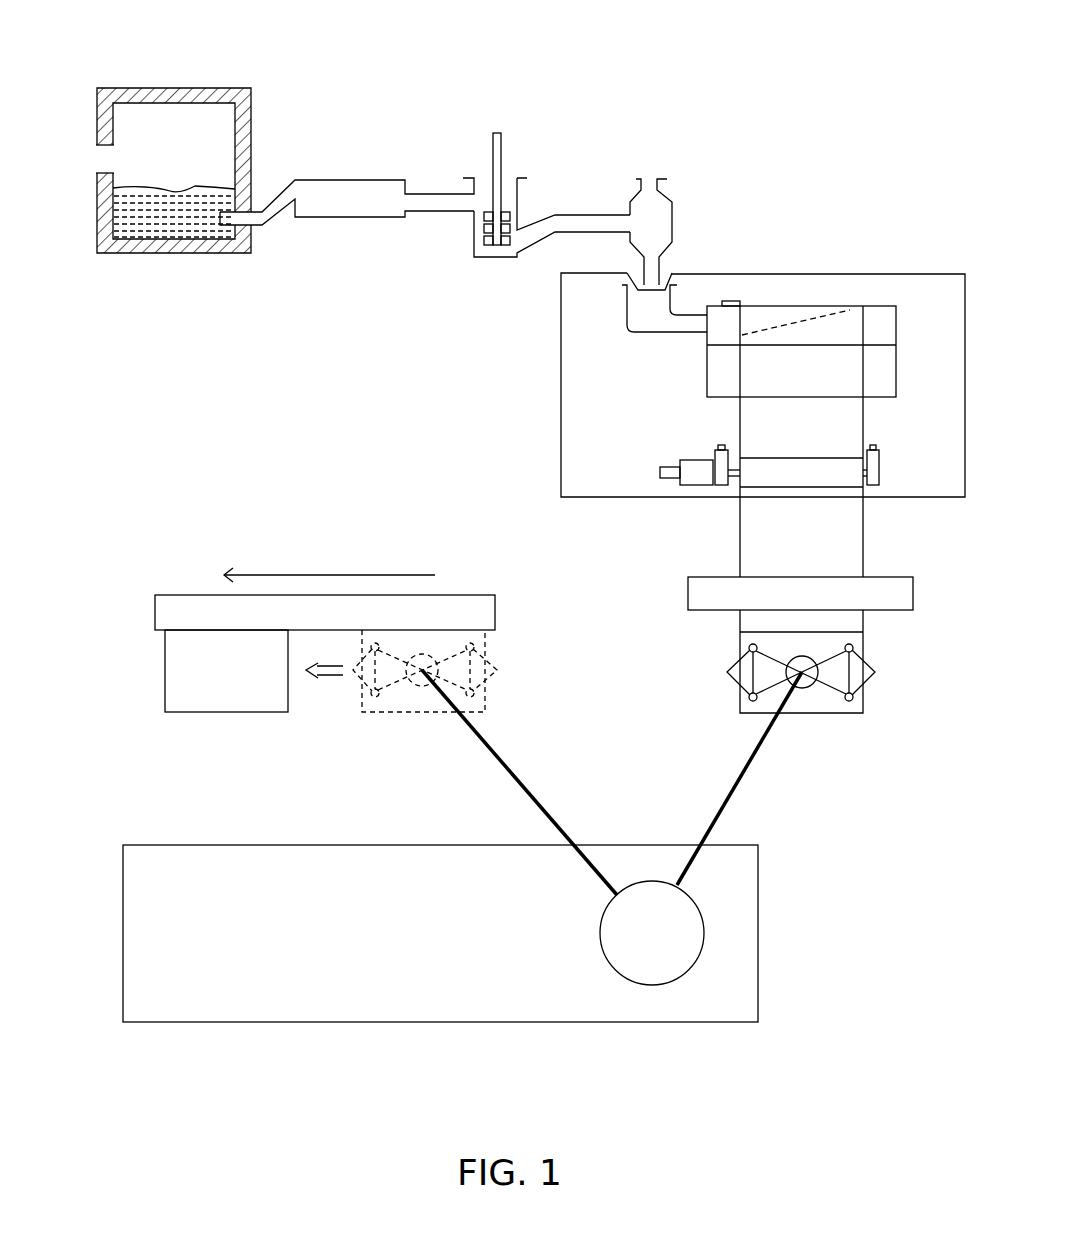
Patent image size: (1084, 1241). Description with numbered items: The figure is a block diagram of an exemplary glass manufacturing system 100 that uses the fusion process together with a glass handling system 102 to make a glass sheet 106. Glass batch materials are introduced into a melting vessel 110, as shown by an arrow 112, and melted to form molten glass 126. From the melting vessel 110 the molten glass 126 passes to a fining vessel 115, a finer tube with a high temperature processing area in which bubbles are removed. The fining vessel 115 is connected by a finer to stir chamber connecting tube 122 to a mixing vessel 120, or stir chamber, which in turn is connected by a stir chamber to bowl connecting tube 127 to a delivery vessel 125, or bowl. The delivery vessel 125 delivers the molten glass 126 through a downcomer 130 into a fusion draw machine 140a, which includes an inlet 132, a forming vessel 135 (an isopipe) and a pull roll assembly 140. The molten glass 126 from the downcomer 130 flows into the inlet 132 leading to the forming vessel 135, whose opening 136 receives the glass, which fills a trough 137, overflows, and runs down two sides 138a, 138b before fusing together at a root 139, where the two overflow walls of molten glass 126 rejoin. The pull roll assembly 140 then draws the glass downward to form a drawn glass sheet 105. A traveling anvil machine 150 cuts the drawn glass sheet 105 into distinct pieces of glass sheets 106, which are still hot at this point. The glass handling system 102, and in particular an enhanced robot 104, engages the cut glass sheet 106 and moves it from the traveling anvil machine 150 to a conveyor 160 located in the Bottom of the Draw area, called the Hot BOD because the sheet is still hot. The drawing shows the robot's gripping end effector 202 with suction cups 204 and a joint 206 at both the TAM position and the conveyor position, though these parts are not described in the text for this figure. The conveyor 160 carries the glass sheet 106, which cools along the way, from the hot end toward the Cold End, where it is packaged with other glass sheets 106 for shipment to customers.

The glass manufacturing system 100 is at (778, 42).
The melting vessel 110 is at (165, 88).
The arrow 112 is at (123, 159).
The molten glass 126 is at (197, 186).
The fining vessel 115 is at (328, 180).
The finer to stir chamber connecting tube 122 is at (440, 217).
The mixing vessel 120 is at (520, 198).
The stir chamber to bowl connecting tube 127 is at (600, 235).
The delivery vessel 125 is at (673, 213).
The downcomer 130 is at (661, 264).
The fusion draw machine 140a is at (561, 395).
The inlet 132 is at (632, 330).
The forming vessel 135 is at (897, 327).
The opening 136 is at (706, 338).
The trough 137 is at (775, 318).
The first side 138a is at (762, 378).
The second side 138b is at (897, 382).
The root 139 is at (826, 398).
The pull roll assembly 140 is at (880, 471).
The glass sheet 105 is at (740, 532).
The traveling anvil machine 150 is at (688, 597).
The glass sheet 106 is at (740, 643).
The gripper / end effector 202 is at (825, 696).
The suction cups 204 is at (616, 666).
The robot arm joint 206 is at (802, 690).
The conveyor 160 is at (155, 612).
The glass handling system 102 is at (215, 845).
The enhanced robot 104 is at (672, 980).